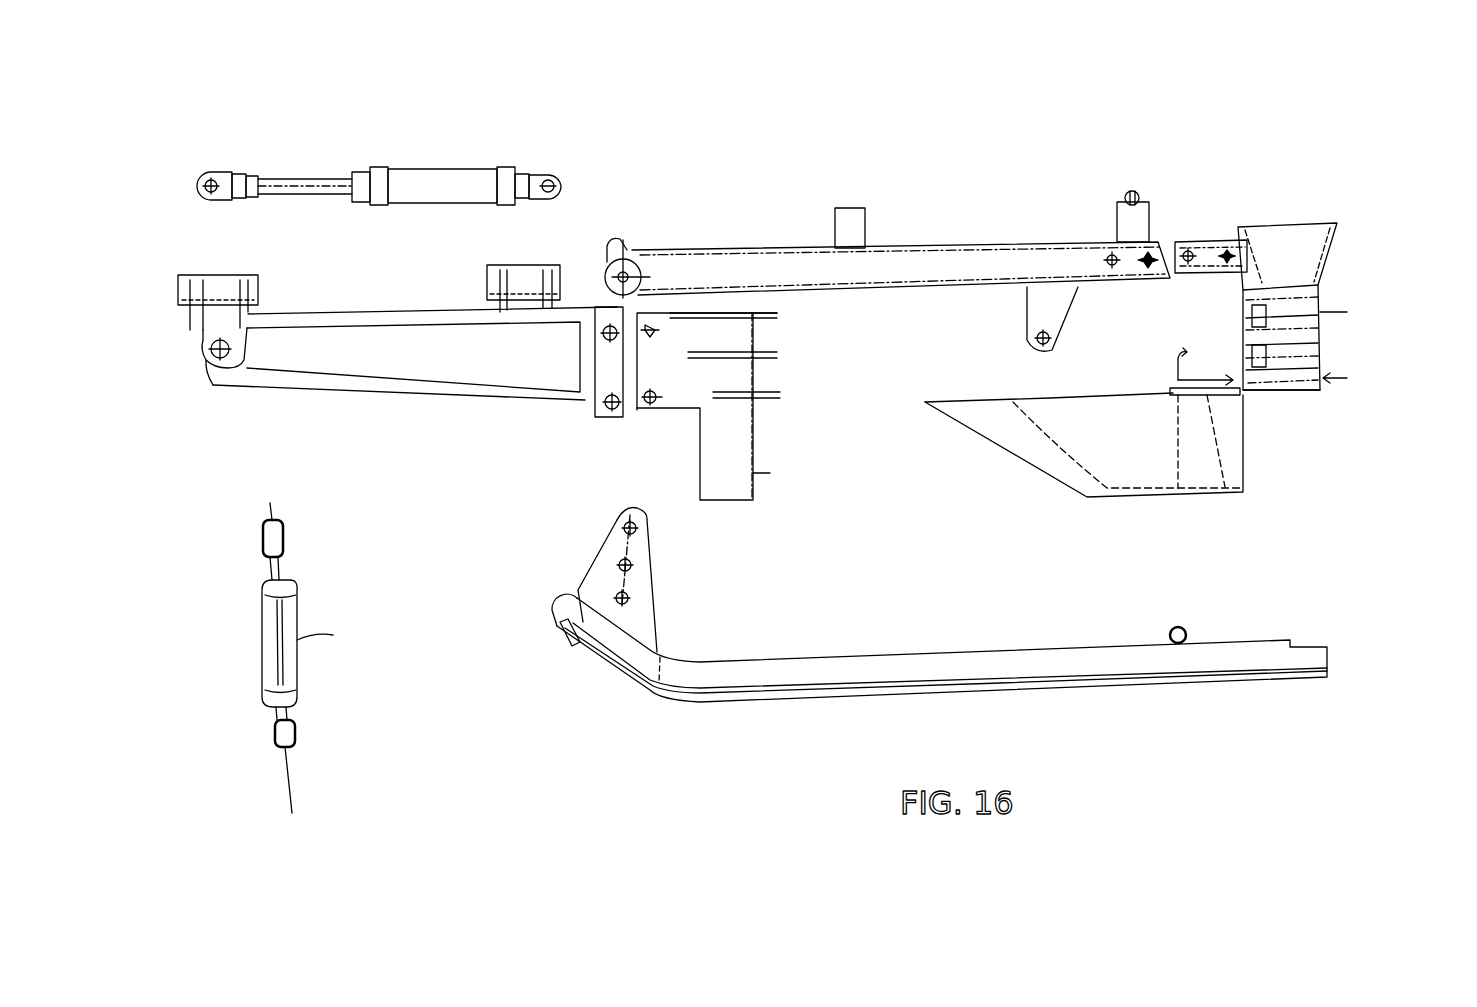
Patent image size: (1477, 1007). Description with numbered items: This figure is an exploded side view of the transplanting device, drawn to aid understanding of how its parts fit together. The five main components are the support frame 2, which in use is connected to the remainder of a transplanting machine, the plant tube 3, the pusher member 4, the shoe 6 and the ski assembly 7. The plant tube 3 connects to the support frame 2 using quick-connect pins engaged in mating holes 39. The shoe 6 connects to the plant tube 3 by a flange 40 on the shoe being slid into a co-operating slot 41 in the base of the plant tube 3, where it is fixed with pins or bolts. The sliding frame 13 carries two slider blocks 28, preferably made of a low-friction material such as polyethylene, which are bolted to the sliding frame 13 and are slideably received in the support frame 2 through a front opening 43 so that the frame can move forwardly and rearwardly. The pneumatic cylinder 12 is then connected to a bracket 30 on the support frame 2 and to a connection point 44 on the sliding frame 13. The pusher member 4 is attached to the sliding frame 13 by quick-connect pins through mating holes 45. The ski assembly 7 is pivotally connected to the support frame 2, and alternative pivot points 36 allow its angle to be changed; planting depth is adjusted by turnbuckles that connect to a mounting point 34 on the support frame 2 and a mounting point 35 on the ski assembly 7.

The support frame 2 is at (945, 245).
The plant tube 3 is at (1340, 225).
The pusher member 4 is at (753, 448).
The shoe 6 is at (1248, 468).
The ski assembly 7 is at (937, 693).
The pneumatic cylinder 12 is at (440, 160).
The sliding frame 13 is at (440, 395).
The slider blocks 28 is at (225, 285).
The bracket 30 is at (1025, 305).
The mounting point 34 is at (1138, 190).
The mounting point 35 is at (1190, 626).
The pivot points 36 is at (615, 523).
The mating holes 39 is at (1112, 256).
The flange 40 is at (1217, 397).
The slot 41 is at (1293, 393).
The front opening 43 is at (623, 250).
The connection point 44 is at (208, 358).
The mating holes 45 is at (657, 340).